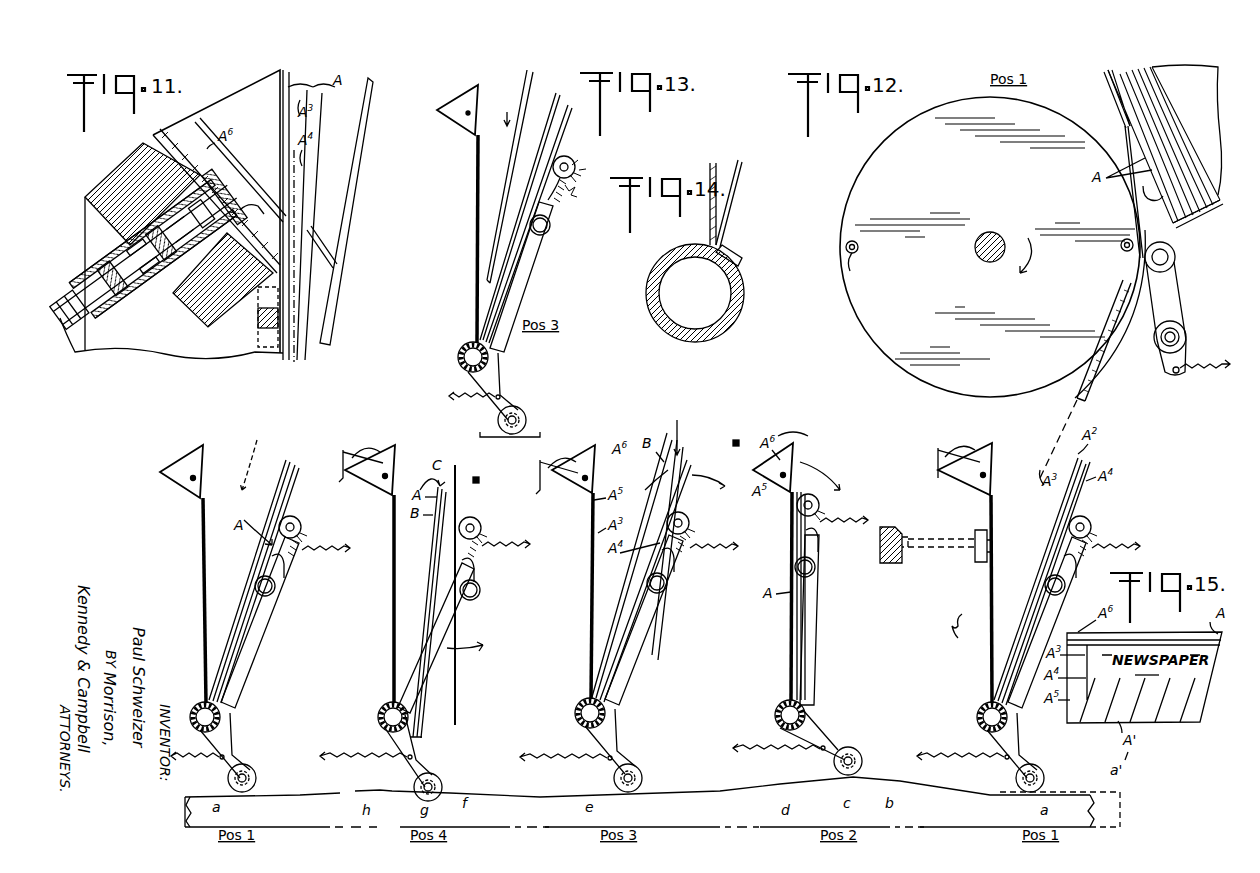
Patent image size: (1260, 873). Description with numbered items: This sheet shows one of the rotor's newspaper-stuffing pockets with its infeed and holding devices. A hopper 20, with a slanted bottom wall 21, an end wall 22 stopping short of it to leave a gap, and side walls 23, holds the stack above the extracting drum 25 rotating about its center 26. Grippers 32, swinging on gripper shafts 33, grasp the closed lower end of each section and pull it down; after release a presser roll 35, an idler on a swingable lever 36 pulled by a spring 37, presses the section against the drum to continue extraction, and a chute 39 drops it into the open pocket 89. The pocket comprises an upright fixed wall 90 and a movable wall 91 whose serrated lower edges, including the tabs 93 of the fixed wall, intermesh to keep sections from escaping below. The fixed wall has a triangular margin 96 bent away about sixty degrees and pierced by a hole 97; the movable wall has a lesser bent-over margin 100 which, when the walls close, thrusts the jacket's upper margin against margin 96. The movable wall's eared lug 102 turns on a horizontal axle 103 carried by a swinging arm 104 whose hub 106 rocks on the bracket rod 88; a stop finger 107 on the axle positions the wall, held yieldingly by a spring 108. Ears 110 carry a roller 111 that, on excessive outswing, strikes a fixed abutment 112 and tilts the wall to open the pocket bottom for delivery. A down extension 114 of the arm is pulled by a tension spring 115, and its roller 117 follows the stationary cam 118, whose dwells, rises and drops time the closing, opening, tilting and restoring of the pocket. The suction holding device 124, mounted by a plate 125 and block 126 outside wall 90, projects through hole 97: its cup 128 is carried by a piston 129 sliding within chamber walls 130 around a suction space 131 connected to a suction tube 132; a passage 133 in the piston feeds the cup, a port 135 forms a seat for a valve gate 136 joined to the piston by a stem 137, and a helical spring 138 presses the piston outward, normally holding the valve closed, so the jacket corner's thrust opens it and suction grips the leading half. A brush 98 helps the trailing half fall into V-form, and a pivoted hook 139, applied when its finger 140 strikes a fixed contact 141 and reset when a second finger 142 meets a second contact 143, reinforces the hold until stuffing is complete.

In FIG. 12, the hopper 20 is at (1122, 130).
In FIG. 12, the bottom wall 21 is at (1209, 212).
In FIG. 12, the end wall 22 is at (1110, 96).
In FIG. 12, the side walls 23 is at (1187, 130).
In FIG. 12, the rotary drum 25 is at (990, 247).
In FIG. 12, the drum shaft 26 is at (990, 265).
In FIG. 12, the grippers 32 is at (850, 262).
In FIG. 12, the gripper shaft 33 is at (859, 247).
In FIG. 12, the presser roll 35 is at (1176, 261).
In FIG. 12, the swingable lever 36 is at (1178, 305).
In FIG. 12, the spring 37 is at (1213, 355).
In FIG. 12, the chute 39 is at (1104, 364).
In FIG. 13, the bracket rod 88 is at (458, 358).
In FIG. 14, the bracket rod 88 is at (742, 290).
In FIG. 15, the bracket rod 88 is at (198, 702).
In FIG. 15, the folder assembly 89 is at (870, 526).
In FIG. 11, the fixed wall 90 is at (276, 357).
In FIG. 13, the fixed wall 90 is at (475, 192).
In FIG. 14, the fixed wall 90 is at (711, 166).
In FIG. 15, the fixed wall 90 is at (203, 554).
In FIG. 11, the movable wall 91 is at (334, 294).
In FIG. 13, the movable wall 91 is at (526, 266).
In FIG. 14, the movable wall 91 is at (742, 166).
In FIG. 15, the movable wall 91 is at (238, 610).
In FIG. 14, the tabs 93 is at (738, 258).
In FIG. 15, the tabs 93 is at (222, 702).
In FIG. 11, the bent-away margin 96 is at (220, 104).
In FIG. 13, the bent-away margin 96 is at (448, 98).
In FIG. 15, the bent-away margin 96 is at (176, 461).
In FIG. 11, the hole 97 is at (257, 199).
In FIG. 13, the hole 97 is at (466, 132).
In FIG. 15, the hole 97 is at (191, 477).
In FIG. 15, the brush 98 is at (678, 430).
In FIG. 11, the bent-over top marginal portion 100 is at (395, 193).
In FIG. 13, the bent-over top marginal portion 100 is at (561, 139).
In FIG. 15, the bent-over top marginal portion 100 is at (287, 490).
In FIG. 15, the eared lug 102 is at (278, 600).
In FIG. 13, the horizontal axle 103 is at (552, 226).
In FIG. 15, the horizontal axle 103 is at (274, 588).
In FIG. 13, the swinging arm 104 is at (533, 287).
In FIG. 15, the swinging arm 104 is at (258, 643).
In FIG. 13, the hub 106 is at (490, 352).
In FIG. 15, the hub 106 is at (227, 707).
In FIG. 15, the stop finger 107 is at (284, 574).
In FIG. 15, the spring 108 is at (334, 554).
In FIG. 15, the ears 110 is at (291, 506).
In FIG. 13, the roller 111 is at (576, 152).
In FIG. 15, the roller 111 is at (298, 519).
In FIG. 13, the abutment 112 is at (581, 191).
In FIG. 15, the abutment 112 is at (308, 536).
In FIG. 13, the down extension 114 is at (500, 374).
In FIG. 15, the down extension 114 is at (238, 744).
In FIG. 13, the tension spring 115 is at (456, 388).
In FIG. 15, the tension spring 115 is at (190, 765).
In FIG. 13, the roller 117 is at (521, 406).
In FIG. 15, the roller 117 is at (256, 776).
In FIG. 13, the stationary cam 118 is at (533, 432).
In FIG. 15, the stationary cam 118 is at (350, 799).
In FIG. 11, the suction holding device 124 is at (104, 225).
In FIG. 11, the plate 125 is at (193, 350).
In FIG. 11, the block 126 is at (114, 170).
In FIG. 11, the terminal cup 128 is at (214, 182).
In FIG. 11, the movable member 129 is at (223, 305).
In FIG. 11, the chamber walls 130 is at (152, 307).
In FIG. 11, the suction space 131 is at (124, 314).
In FIG. 11, the suction tube 132 is at (95, 349).
In FIG. 11, the suction passage 133 is at (224, 198).
In FIG. 11, the suction port 135 is at (88, 268).
In FIG. 11, the valve gate 136 is at (110, 338).
In FIG. 11, the stem 137 is at (96, 258).
In FIG. 11, the helical spring 138 is at (166, 290).
In FIG. 15, the hook 139 is at (371, 444).
In FIG. 15, the operating finger 140 is at (342, 446).
In FIG. 15, the fixed contact 141 is at (738, 440).
In FIG. 15, the second finger 142 is at (352, 492).
In FIG. 15, the second fixed contact 143 is at (479, 480).